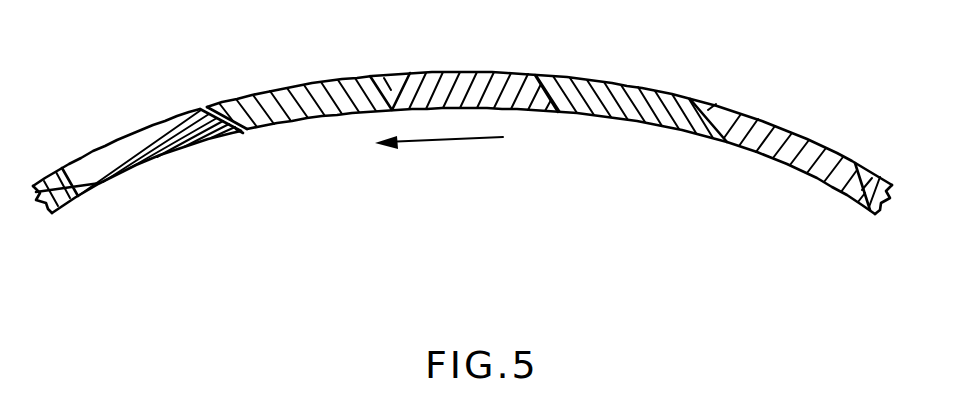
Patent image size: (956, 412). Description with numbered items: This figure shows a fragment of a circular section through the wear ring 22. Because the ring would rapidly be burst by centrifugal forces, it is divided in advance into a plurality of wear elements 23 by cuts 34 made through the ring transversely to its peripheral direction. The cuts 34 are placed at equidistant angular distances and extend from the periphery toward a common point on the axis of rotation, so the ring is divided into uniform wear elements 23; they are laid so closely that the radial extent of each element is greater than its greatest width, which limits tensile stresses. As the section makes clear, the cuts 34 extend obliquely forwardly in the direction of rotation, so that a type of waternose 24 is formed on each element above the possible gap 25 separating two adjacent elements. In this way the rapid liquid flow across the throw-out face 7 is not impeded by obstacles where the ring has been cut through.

The wear ring 22 is at (462, 123).
The wear elements 23 is at (280, 89).
The waternose 24 is at (240, 133).
The gap 25 is at (206, 109).
The cuts 34 is at (537, 74).
The throw-out face 7 is at (300, 121).